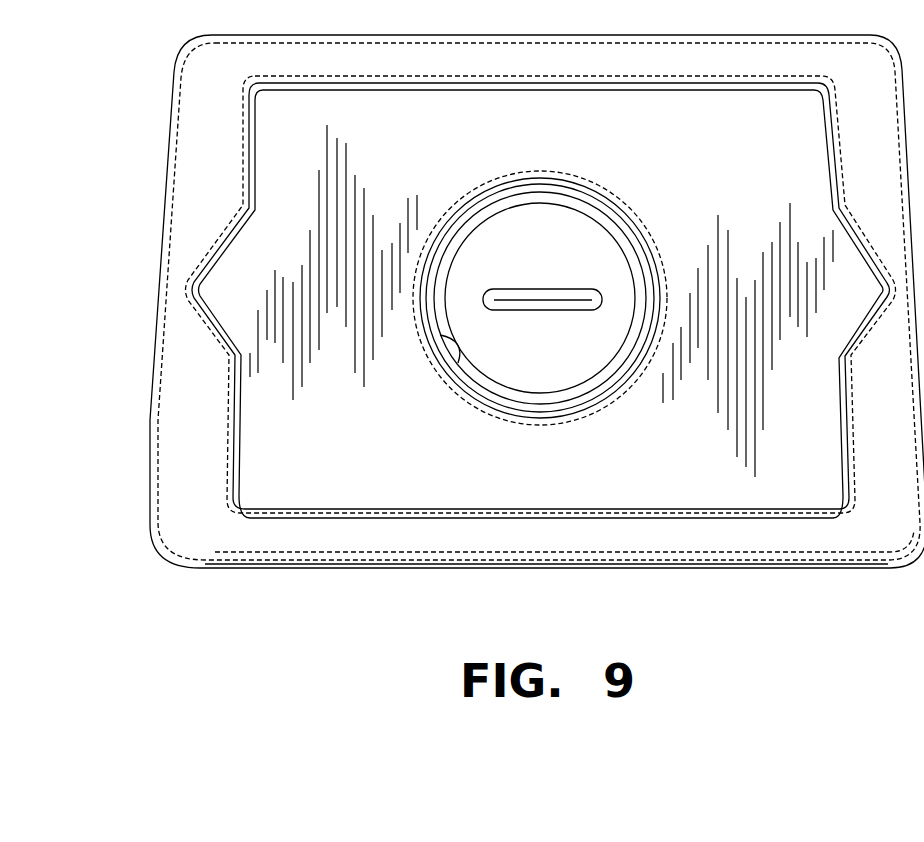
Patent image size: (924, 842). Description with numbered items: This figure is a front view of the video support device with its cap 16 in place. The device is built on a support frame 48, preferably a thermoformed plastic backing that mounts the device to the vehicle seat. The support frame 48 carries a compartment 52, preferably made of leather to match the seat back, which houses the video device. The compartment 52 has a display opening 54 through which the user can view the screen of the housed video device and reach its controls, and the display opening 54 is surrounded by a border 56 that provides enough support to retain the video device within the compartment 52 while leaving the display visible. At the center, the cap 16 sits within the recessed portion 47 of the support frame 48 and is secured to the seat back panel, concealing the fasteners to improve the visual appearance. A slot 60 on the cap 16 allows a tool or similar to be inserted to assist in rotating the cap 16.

The cap 16 is at (517, 233).
The recessed portion 47 is at (457, 362).
The support frame 48 is at (593, 413).
The compartment 52 is at (175, 272).
The display opening 54 is at (298, 473).
The border 56 is at (437, 538).
The slot 60 is at (553, 293).